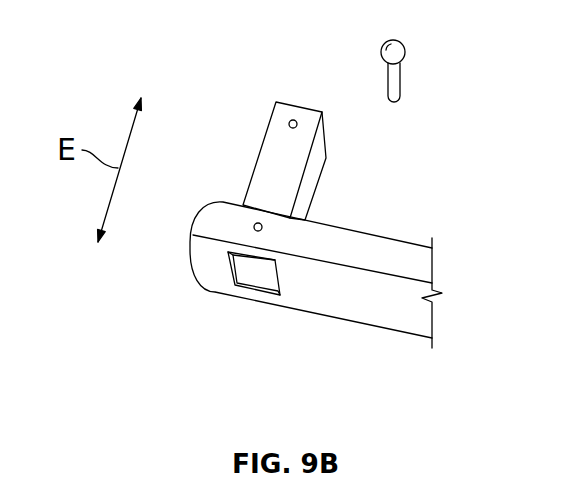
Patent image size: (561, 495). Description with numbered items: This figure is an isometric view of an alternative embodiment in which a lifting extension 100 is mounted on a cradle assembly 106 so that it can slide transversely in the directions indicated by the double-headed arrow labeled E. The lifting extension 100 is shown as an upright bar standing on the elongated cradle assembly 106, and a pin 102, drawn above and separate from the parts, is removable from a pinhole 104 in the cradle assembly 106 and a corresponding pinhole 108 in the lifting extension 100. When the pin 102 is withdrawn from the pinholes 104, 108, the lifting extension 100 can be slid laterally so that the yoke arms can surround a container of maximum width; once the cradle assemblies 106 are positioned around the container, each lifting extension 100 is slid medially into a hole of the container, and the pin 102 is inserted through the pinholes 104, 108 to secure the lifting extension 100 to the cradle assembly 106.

The lifting extension 100 is at (308, 181).
The pin 102 is at (413, 70).
The pinhole 104 is at (255, 224).
The cradle assembly 106 is at (375, 251).
The pinhole 108 is at (294, 120).